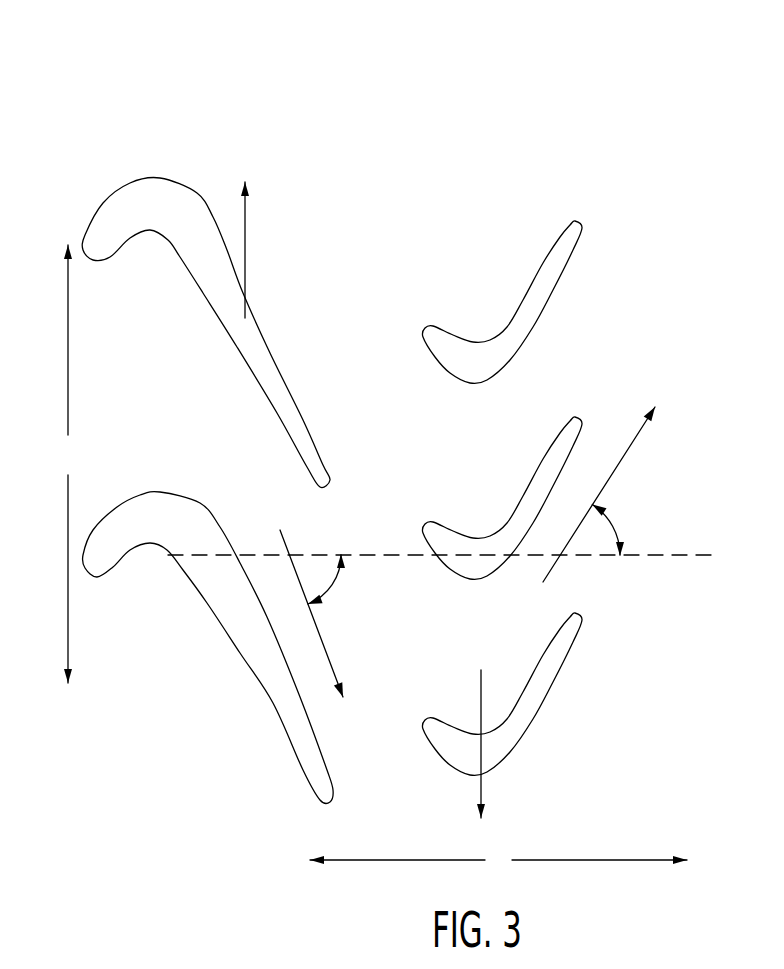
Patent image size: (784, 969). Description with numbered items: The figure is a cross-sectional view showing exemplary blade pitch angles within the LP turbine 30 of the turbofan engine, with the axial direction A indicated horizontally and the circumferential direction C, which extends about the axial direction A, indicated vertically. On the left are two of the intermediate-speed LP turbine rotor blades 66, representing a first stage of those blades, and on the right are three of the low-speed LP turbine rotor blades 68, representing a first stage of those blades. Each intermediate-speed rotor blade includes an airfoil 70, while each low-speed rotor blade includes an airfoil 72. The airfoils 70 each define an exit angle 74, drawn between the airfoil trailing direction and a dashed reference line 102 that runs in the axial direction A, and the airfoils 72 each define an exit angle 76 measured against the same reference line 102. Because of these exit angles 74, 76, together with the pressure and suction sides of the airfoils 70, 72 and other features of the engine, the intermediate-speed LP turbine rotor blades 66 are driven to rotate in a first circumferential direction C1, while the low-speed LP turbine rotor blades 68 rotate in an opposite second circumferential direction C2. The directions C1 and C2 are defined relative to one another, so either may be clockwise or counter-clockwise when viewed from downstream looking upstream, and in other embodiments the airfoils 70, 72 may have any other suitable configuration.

The LP turbine 30 is at (442, 97).
The intermediate-speed LP turbine rotor blades 66 is at (187, 126).
The low-speed LP turbine rotor blades 68 is at (515, 212).
The airfoil 70 is at (175, 233).
The airfoil 72 is at (538, 297).
The exit angle 74 is at (327, 587).
The exit angle 76 is at (613, 518).
The reference line (axial direction) 102 is at (687, 555).
The circumferential direction C is at (67, 464).
The first circumferential direction C1 is at (246, 217).
The second circumferential direction C2 is at (482, 782).
The axial direction A is at (498, 861).